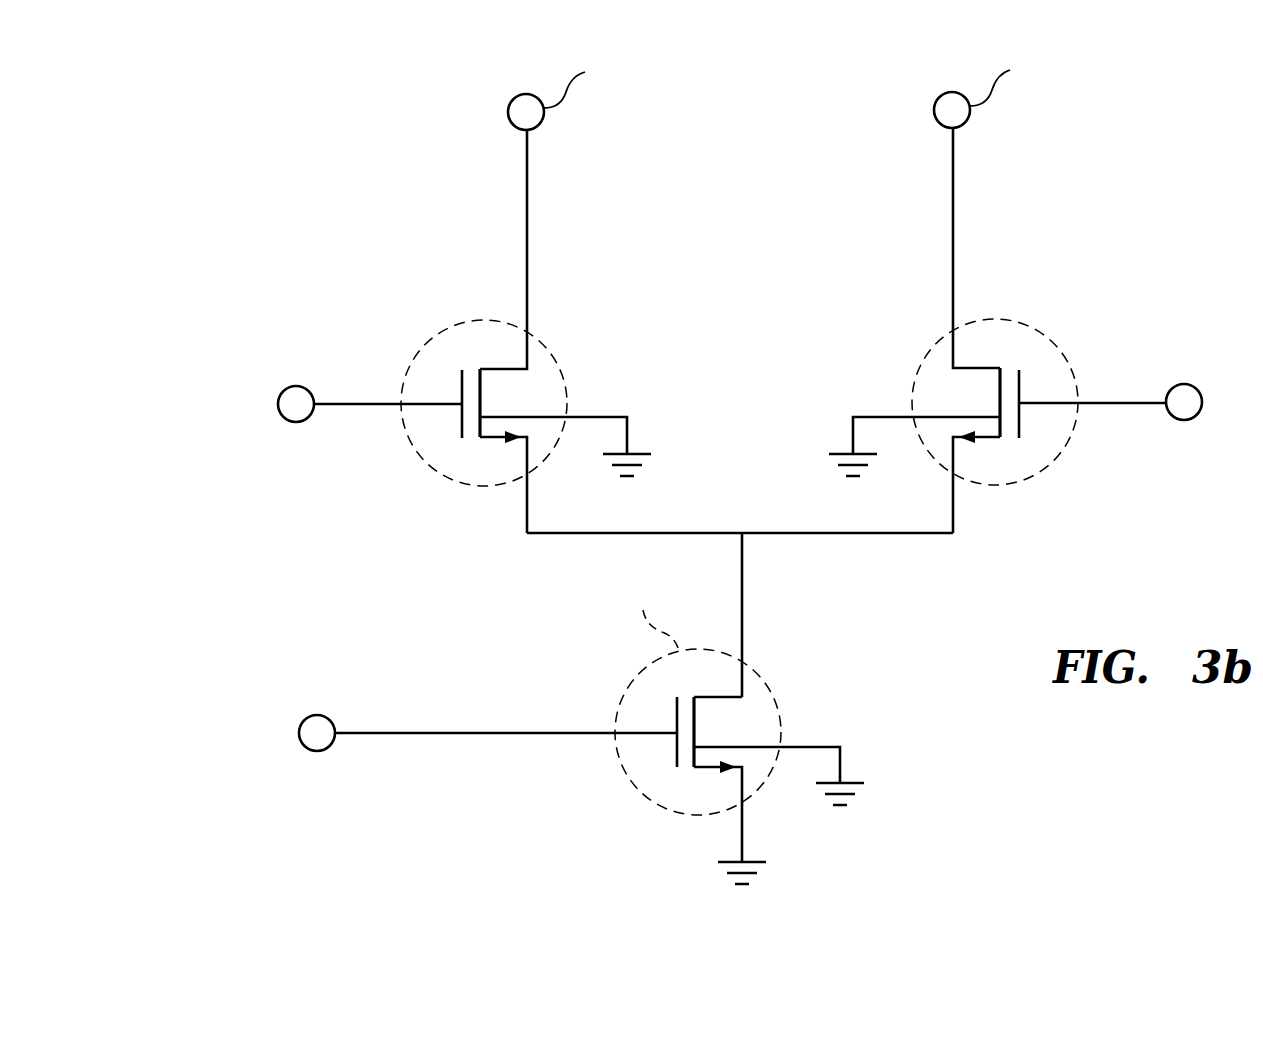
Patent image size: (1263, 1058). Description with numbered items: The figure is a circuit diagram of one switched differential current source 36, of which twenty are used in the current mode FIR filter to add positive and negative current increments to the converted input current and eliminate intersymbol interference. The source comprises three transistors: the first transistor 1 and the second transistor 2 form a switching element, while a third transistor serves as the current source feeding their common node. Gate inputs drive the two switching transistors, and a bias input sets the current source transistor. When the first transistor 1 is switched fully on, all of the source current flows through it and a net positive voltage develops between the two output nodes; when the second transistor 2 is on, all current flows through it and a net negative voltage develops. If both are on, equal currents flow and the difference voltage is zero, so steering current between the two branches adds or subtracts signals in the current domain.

The switched differential current source 36 is at (1161, 205).
The transistor T1 1 is at (432, 282).
The transistor T2 2 is at (1049, 282).